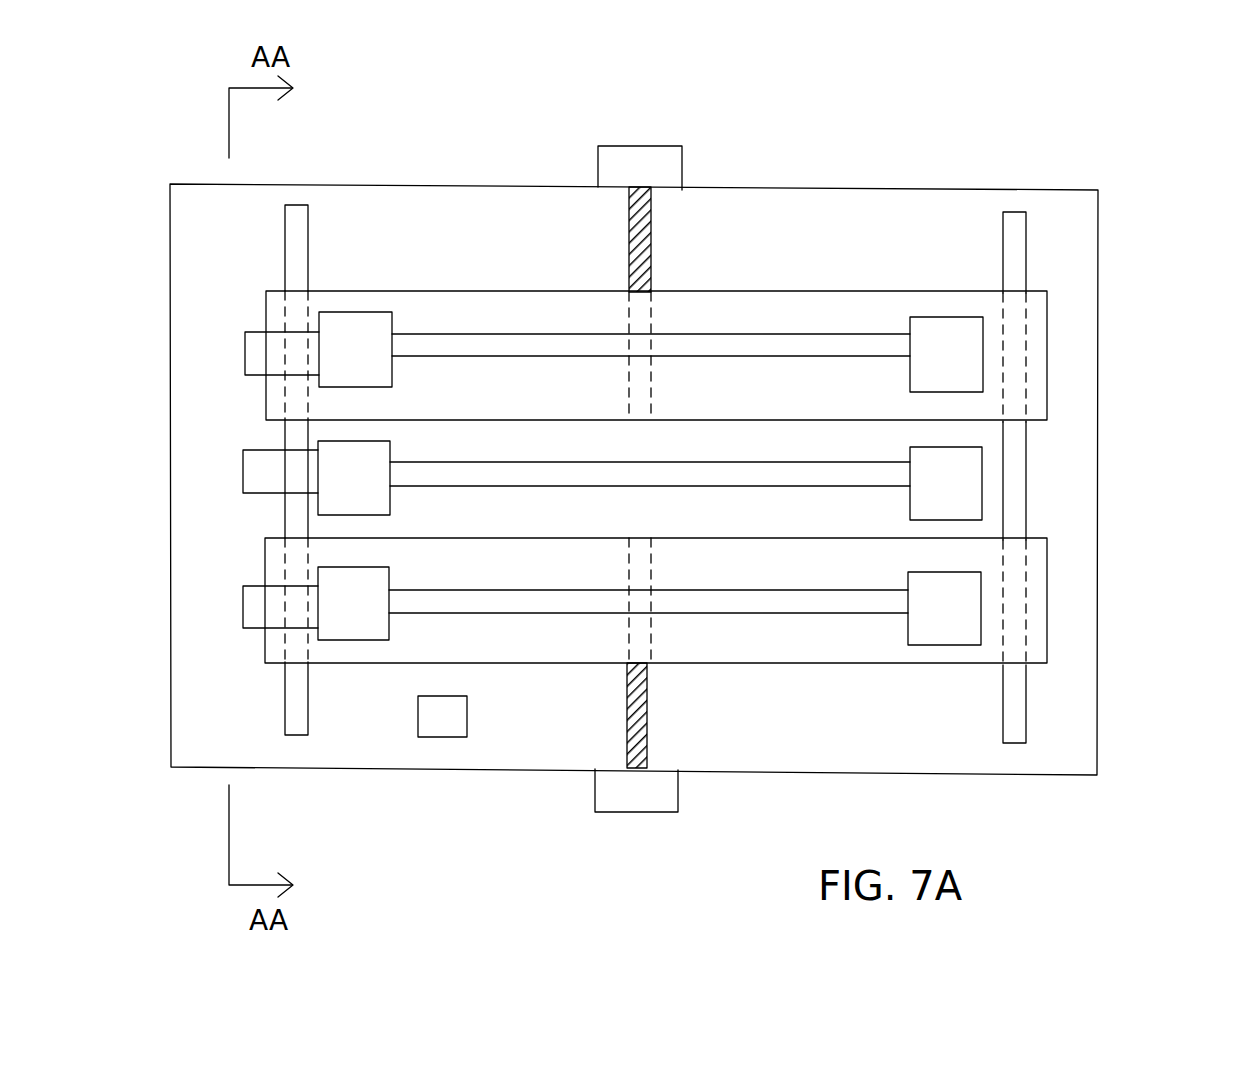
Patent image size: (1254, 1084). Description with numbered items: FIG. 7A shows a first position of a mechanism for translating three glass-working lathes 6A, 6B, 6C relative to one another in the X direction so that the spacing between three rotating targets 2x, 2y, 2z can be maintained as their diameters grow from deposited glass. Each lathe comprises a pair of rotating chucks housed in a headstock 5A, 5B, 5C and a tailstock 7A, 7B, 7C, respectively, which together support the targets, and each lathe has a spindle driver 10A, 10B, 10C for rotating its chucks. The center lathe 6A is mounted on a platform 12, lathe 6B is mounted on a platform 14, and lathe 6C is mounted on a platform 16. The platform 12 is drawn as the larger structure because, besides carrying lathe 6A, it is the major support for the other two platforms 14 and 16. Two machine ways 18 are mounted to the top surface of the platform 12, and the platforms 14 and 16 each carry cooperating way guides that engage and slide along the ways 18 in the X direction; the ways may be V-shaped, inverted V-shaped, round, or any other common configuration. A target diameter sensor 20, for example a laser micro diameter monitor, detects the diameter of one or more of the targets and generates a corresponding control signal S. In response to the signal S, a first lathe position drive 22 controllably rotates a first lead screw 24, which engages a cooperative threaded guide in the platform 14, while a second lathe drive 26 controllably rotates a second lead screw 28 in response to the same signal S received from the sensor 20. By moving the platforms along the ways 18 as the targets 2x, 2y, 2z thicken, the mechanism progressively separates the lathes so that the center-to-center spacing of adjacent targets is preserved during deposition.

The platform 12 is at (1060, 718).
The platform 14 is at (835, 320).
The platform 16 is at (812, 650).
The machine ways 18 is at (309, 238).
The target diameter sensor 20 is at (420, 737).
The first lathe position drive 22 is at (647, 812).
The first lead screw 24 is at (647, 720).
The second lathe drive 26 is at (681, 146).
The second lead screw 28 is at (651, 240).
The target 2x is at (735, 337).
The target 2y is at (505, 463).
The target 2z is at (713, 603).
The headstock 5A is at (385, 460).
The headstock 5B is at (365, 328).
The headstock 5C is at (360, 622).
The lathe 6A is at (990, 478).
The lathe 6B is at (1053, 338).
The lathe 6C is at (1052, 600).
The tailstock 7A is at (958, 468).
The tailstock 7B is at (958, 345).
The tailstock 7C is at (942, 620).
The spindle driver 10A is at (243, 493).
The spindle driver 10B is at (245, 378).
The spindle driver 10C is at (243, 628).
The control signal S is at (533, 803).